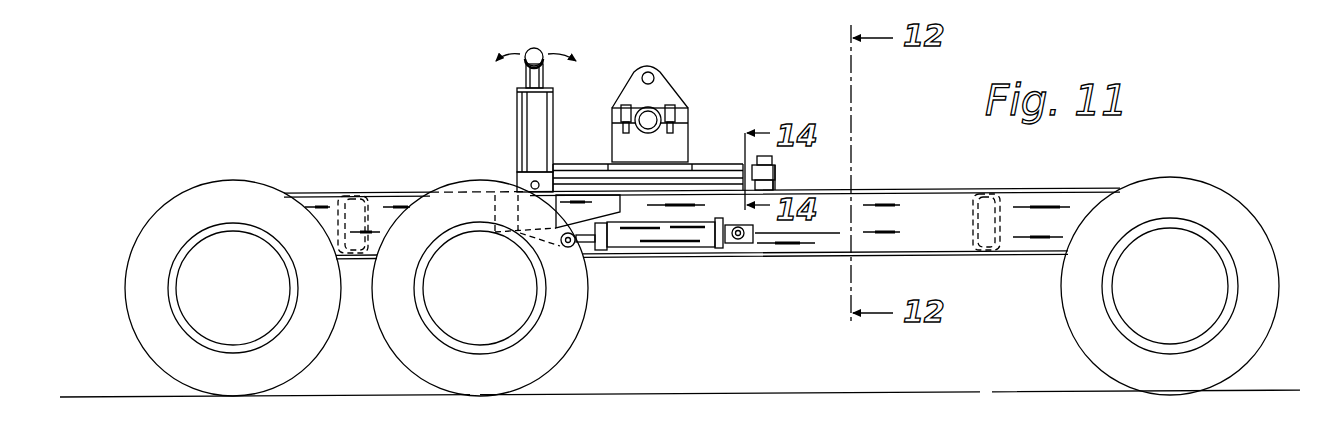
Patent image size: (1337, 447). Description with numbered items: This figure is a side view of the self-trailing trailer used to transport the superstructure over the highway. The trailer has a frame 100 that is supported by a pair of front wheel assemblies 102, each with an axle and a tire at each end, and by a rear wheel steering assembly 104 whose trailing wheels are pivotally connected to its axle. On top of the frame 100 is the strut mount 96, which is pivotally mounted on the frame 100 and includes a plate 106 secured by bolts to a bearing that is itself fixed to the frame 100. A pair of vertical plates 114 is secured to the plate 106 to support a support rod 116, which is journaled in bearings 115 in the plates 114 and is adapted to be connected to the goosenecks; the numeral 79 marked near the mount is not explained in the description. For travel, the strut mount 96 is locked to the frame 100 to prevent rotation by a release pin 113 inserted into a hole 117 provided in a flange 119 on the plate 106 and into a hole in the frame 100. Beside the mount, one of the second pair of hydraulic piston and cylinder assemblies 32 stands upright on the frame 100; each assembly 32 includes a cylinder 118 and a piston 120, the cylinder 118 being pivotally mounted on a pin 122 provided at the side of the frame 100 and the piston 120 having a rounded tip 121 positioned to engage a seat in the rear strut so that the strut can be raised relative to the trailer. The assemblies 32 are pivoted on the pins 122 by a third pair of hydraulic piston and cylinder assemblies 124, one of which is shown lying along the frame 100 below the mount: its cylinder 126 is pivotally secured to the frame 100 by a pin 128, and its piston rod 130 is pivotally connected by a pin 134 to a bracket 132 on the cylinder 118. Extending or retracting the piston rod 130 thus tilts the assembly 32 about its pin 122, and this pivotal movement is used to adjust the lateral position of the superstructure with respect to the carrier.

The hydraulic piston and cylinder assemblies 32 is at (533, 107).
The bracket tongue 79 is at (650, 104).
The strut mount 96 is at (655, 99).
The frame 100 is at (938, 188).
The front wheel assemblies 102 is at (387, 351).
The rear wheel steering assembly 104 is at (1057, 291).
The plate 106 is at (705, 164).
The release pin 113 is at (778, 178).
The vertical plates 114 is at (615, 135).
The bearings 115 is at (662, 108).
The support rod 116 is at (633, 128).
The hole 117 is at (776, 168).
The cylinder 118 is at (517, 106).
The flange 119 is at (772, 161).
The piston 120 is at (546, 80).
The rounded tips 121 is at (541, 52).
The pins 122 is at (527, 183).
The hydraulic piston and cylinder assemblies 124 is at (657, 249).
The cylinder 126 is at (687, 248).
The pin 128 is at (739, 240).
The piston rod 130 is at (587, 244).
The bracket 132 is at (540, 237).
The pin 134 is at (566, 248).